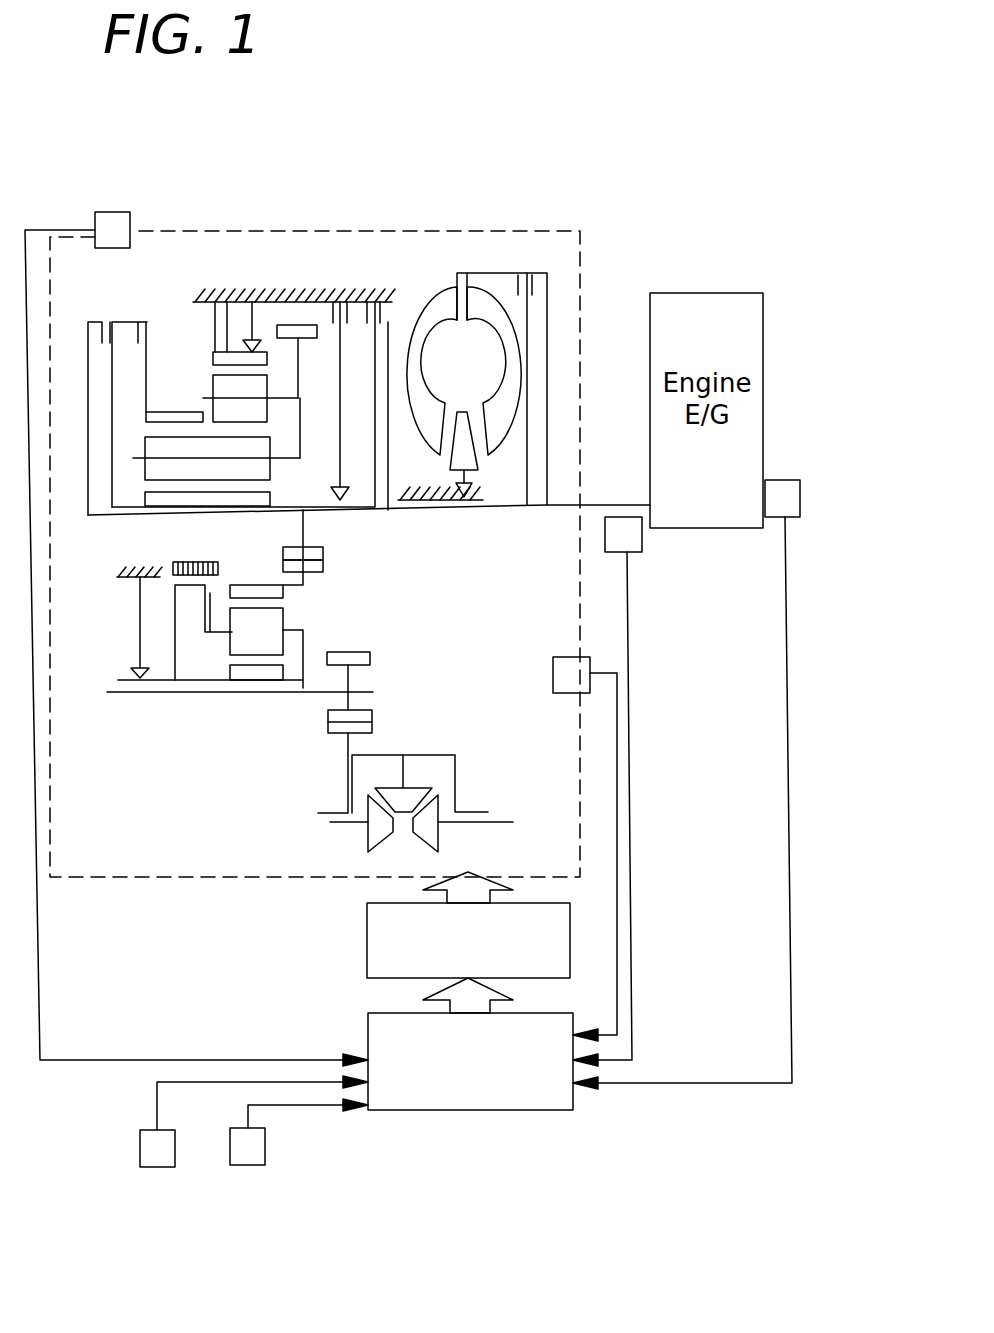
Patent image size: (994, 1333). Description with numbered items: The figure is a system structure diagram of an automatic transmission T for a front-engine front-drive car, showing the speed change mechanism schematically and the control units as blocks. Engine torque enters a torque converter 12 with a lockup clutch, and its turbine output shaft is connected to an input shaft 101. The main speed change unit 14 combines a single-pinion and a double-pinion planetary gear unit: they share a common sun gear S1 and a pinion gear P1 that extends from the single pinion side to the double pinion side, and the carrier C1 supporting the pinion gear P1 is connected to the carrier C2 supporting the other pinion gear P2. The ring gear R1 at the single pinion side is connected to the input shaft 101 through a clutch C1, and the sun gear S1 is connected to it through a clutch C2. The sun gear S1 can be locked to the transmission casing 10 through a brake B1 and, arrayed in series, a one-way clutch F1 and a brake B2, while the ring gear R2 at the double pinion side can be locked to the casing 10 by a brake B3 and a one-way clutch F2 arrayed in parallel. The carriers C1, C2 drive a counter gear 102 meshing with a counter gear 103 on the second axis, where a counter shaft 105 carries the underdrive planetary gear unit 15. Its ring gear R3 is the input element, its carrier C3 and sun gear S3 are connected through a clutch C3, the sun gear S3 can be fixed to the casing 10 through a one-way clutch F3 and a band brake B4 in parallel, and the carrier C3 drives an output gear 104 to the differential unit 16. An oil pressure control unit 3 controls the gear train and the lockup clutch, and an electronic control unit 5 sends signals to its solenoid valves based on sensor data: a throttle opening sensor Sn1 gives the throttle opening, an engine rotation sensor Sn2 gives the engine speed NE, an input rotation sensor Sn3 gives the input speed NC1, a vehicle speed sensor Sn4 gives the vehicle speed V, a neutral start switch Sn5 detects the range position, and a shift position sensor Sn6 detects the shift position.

The automatic transmission T is at (365, 206).
The main speed change unit 14 is at (220, 248).
The transmission casing 10 is at (300, 300).
The torque converter 12 is at (457, 276).
The input shaft 101 is at (435, 505).
The planetary gear unit of underdrive structure 15 is at (244, 720).
The differential unit 16 is at (450, 724).
The counter gear 102 is at (323, 551).
The counter gear 103 is at (323, 563).
The output gear 104 is at (365, 652).
The counter shaft 105 is at (233, 695).
The brake B1 is at (382, 302).
The brake B2 is at (333, 302).
The brake B3 is at (200, 300).
The band brake B4 is at (180, 562).
The clutch / carrier C1 is at (138, 325).
The clutch / carrier C2 is at (100, 325).
The clutch / carrier C3 is at (200, 598).
The one-way clutch F1 is at (336, 484).
The one-way clutch F2 is at (252, 302).
The one-way clutch F3 is at (133, 672).
The ring gear R1 is at (203, 398).
The ring gear R2 is at (213, 354).
The ring gear R3 is at (260, 585).
The pinion gear P1 is at (273, 465).
The pinion gear P2 is at (213, 384).
The sun gear S1 is at (210, 510).
The sun gear S3 is at (268, 676).
The oil pressure control unit 3 is at (367, 932).
The electronic control unit 5 is at (493, 1112).
The throttle opening sensor Sn1 is at (785, 480).
The engine rotation sensor Sn2 is at (633, 552).
The input rotation sensor Sn3 is at (125, 212).
The vehicle speed sensor Sn4 is at (572, 657).
The neutral start switch Sn5 is at (140, 1150).
The shift position sensor Sn6 is at (265, 1155).
The input RPM NC1 is at (196, 648).
The vehicle speed V is at (595, 857).
The engine RPM NE is at (636, 809).